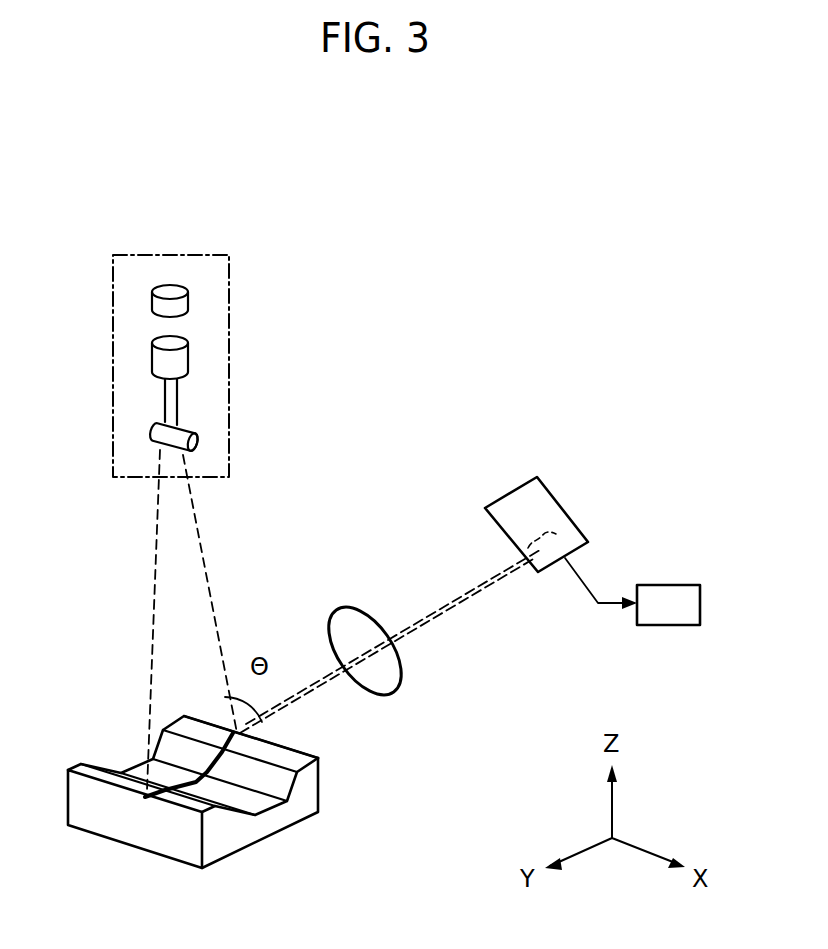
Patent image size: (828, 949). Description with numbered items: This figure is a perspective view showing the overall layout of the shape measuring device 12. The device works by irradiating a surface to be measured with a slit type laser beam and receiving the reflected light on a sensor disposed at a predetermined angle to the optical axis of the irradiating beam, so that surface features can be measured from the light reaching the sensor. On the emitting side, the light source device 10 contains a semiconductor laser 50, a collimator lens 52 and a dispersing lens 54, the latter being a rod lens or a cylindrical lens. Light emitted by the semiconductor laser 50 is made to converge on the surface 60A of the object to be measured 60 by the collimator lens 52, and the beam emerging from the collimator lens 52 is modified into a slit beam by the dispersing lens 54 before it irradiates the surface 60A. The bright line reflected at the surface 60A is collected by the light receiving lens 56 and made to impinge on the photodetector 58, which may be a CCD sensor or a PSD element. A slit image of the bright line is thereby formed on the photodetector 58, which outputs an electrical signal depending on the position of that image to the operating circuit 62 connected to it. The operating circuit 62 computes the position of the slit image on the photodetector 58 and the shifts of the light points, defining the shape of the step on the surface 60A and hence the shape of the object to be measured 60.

The light source device 10 is at (188, 255).
The shape measuring device 12 is at (297, 216).
The semiconductor laser 50 is at (186, 309).
The collimator lens 52 is at (182, 360).
The dispersing lens 54 is at (190, 435).
The light receiving lens 56 is at (392, 680).
The photodetector 58 is at (548, 510).
The object to be measured 60 is at (268, 840).
The surface to be measured 60A is at (110, 774).
The operating circuit 62 is at (670, 625).